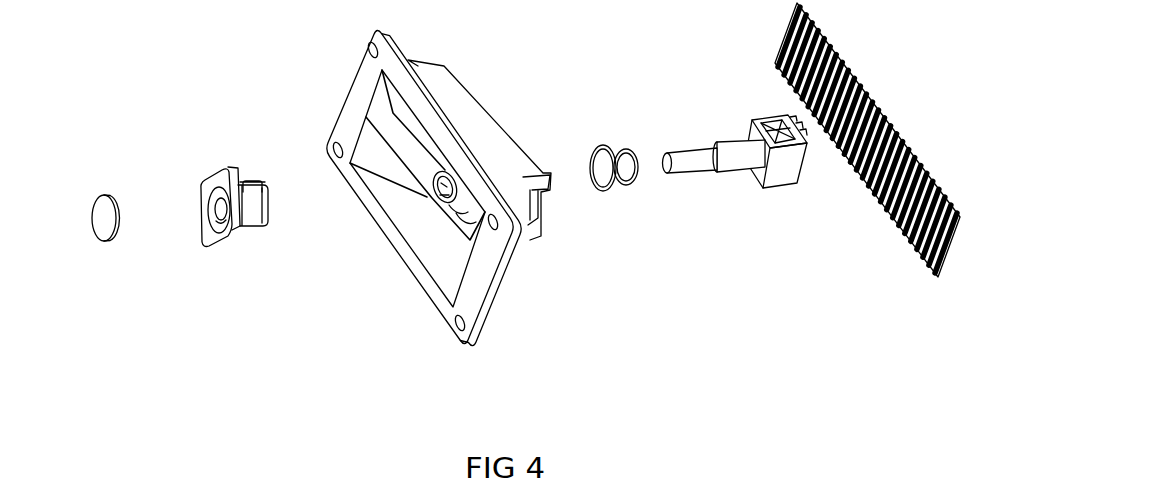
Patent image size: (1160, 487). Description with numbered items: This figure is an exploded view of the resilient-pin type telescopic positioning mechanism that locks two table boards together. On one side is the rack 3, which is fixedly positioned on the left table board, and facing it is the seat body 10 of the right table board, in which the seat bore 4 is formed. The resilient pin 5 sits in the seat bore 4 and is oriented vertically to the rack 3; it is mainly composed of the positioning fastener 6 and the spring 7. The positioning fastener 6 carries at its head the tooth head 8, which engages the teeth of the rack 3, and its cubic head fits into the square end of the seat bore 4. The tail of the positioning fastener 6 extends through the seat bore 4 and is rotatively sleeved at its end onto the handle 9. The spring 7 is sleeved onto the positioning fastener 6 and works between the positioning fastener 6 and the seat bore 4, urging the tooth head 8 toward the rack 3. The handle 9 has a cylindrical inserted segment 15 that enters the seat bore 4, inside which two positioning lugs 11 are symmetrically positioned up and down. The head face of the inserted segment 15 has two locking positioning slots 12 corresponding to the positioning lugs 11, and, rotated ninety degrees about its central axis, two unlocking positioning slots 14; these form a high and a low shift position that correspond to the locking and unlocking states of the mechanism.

The rack 3 is at (933, 175).
The seat bore 4 is at (366, 118).
The resilient pin 5 is at (646, 115).
The positioning fastener 6 is at (739, 169).
The spring 7 is at (610, 197).
The tooth head 8 is at (790, 117).
The handle 9 is at (267, 219).
The seat body 10 is at (423, 277).
The positioning lug 11 is at (427, 197).
The locking positioning slot 12 is at (251, 181).
The unlocking positioning slot 14 is at (268, 216).
The inserted segment 15 is at (253, 221).